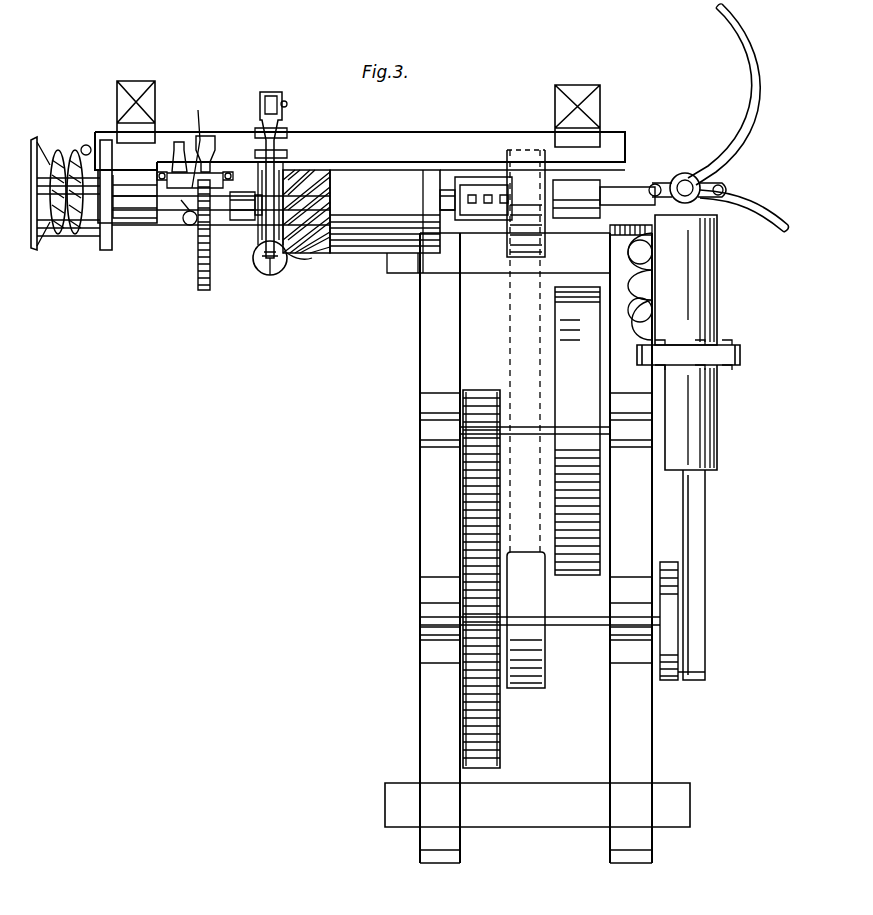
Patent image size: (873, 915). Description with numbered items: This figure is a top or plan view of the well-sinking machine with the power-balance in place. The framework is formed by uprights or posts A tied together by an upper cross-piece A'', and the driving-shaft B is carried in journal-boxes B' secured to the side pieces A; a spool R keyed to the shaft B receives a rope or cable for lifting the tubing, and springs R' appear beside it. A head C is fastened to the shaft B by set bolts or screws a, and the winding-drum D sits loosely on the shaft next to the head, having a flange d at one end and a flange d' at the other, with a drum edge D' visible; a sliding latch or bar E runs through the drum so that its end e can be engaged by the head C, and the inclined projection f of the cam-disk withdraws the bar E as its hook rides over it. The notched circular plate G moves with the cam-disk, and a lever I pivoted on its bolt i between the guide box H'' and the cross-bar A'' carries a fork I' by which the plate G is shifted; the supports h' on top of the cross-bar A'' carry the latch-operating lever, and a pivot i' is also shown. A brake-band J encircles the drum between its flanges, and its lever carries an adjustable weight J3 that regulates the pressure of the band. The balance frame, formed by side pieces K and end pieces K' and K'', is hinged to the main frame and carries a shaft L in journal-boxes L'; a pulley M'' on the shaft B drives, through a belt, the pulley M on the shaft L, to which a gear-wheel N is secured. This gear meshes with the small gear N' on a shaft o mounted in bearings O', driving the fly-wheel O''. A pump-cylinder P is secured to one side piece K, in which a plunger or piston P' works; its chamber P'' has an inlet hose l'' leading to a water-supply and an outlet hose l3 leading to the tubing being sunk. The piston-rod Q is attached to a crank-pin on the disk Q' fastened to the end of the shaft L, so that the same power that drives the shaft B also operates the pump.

The uprights or posts A is at (367, 103).
The cross-piece A'' is at (360, 151).
The spool R is at (71, 199).
The springs R' is at (70, 177).
The driving-shaft B is at (376, 213).
The journal-boxes B' is at (576, 199).
The guide box or plate H'' is at (195, 179).
The lever I is at (173, 144).
The fork I' is at (182, 226).
The pivot or bolt i is at (196, 138).
The pivot i' is at (684, 173).
The supports h' is at (212, 140).
The circular plate G is at (198, 280).
The sliding latch or bar E is at (235, 220).
The inclined projection f is at (258, 215).
The brake-band J is at (271, 92).
The adjustable weight J3 is at (284, 104).
The flange or rim d' is at (306, 191).
The winding-drum D is at (392, 211).
The drum flange D' is at (302, 264).
The flange or rim d is at (423, 232).
The end of sliding latch e is at (440, 200).
The head C is at (470, 177).
The set bolts or screws a is at (488, 190).
The pulley M'' is at (526, 203).
The hose or pipe l3 is at (740, 115).
The pipe or hose l'' is at (744, 207).
The inlet and outlet chamber P'' is at (702, 176).
The side pieces K is at (536, 544).
The end piece K' is at (535, 257).
The end piece K'' is at (537, 805).
The bearings O' is at (536, 420).
The shaft o is at (535, 421).
The fly-wheel O'' is at (577, 431).
The small gear N' is at (481, 568).
The gear-wheel N is at (493, 670).
The pulley M is at (526, 419).
The journal-boxes L' is at (536, 620).
The shaft L is at (540, 633).
The pump-cylinder P is at (672, 280).
The plunger or piston P' is at (688, 405).
The piston-rod Q is at (695, 575).
The disk Q' is at (690, 621).